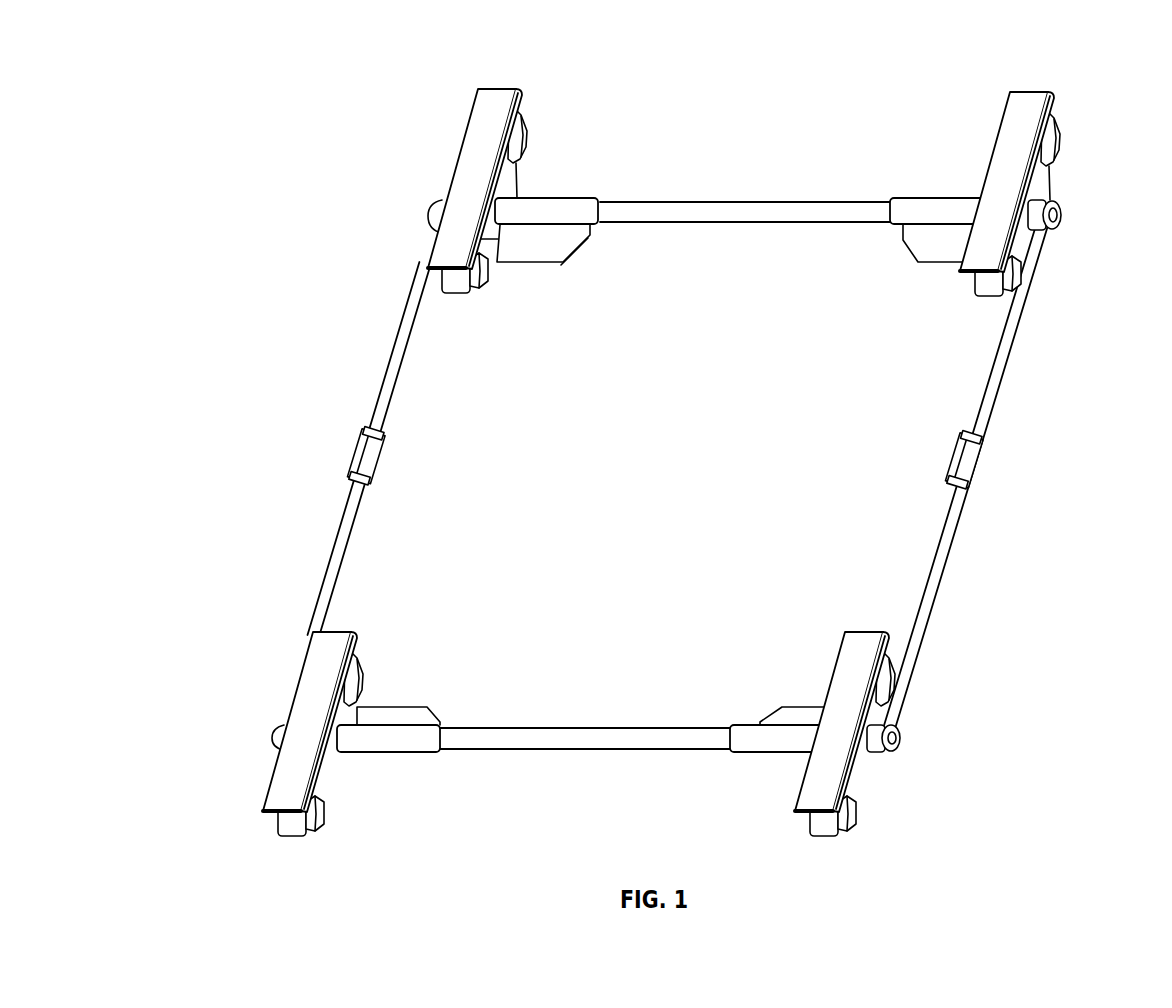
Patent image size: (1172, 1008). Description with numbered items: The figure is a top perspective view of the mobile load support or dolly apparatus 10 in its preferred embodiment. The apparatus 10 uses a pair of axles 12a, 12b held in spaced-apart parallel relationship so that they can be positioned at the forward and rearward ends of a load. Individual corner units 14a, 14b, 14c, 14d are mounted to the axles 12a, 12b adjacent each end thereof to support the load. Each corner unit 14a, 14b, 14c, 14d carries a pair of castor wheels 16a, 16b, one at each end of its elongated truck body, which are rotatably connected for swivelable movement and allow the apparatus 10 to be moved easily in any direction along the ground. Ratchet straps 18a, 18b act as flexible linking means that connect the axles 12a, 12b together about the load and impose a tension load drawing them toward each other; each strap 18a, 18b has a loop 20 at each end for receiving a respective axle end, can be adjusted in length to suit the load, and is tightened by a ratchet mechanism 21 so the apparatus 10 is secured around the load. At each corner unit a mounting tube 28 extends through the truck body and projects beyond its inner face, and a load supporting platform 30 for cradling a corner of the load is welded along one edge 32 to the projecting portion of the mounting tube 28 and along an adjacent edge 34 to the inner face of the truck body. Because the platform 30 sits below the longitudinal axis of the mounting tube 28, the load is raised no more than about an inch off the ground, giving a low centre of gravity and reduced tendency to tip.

The mobile load support apparatus 10 is at (366, 52).
The axle 12a is at (706, 205).
The axle 12b is at (592, 732).
The corner unit 14a is at (448, 142).
The corner unit 14b is at (975, 144).
The corner unit 14c is at (895, 768).
The corner unit 14d is at (260, 773).
The castor wheel 16a is at (522, 130).
The castor wheel 16b is at (466, 292).
The ratchet strap 18a is at (380, 392).
The ratchet strap 18b is at (1003, 403).
The loop 20 is at (1060, 228).
The ratchet mechanism 21 is at (360, 455).
The mounting tube 28 is at (574, 198).
The load supporting platform 30 is at (555, 250).
The edge 32 is at (582, 236).
The adjacent edge 34 is at (512, 245).